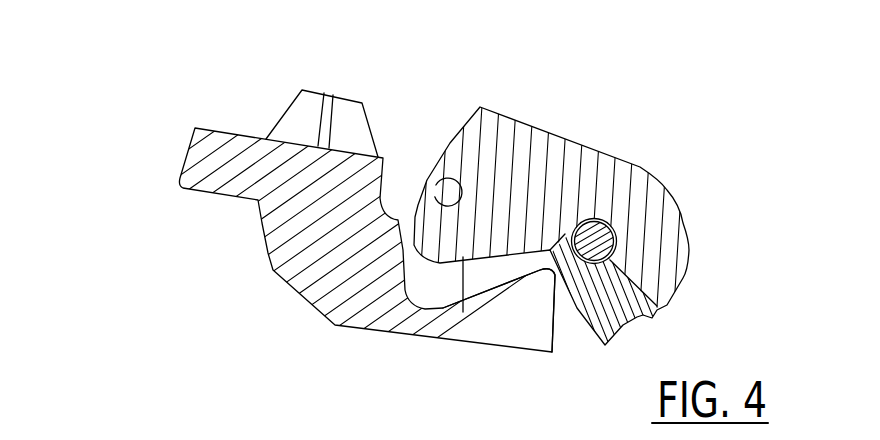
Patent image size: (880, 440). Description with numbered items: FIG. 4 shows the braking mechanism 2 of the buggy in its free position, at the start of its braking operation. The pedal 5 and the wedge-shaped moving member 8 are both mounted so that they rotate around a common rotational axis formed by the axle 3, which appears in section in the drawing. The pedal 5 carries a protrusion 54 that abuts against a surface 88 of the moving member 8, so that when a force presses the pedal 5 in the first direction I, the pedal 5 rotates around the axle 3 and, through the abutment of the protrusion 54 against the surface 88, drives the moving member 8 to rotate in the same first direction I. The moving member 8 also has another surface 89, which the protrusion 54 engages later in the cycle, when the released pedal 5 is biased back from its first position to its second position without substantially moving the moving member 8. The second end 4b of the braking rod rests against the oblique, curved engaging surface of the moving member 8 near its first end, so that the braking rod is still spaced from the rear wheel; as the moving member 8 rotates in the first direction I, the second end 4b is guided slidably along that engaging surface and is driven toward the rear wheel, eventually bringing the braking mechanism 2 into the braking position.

The braking mechanism 2 is at (586, 96).
The axle 3 is at (597, 242).
The second end of the braking rod 4b is at (442, 192).
The pedal 5 is at (238, 152).
The moving member 8 is at (592, 165).
The protrusion of the pedal 54 is at (523, 305).
The surface of the moving member 88 is at (558, 290).
The another surface of the moving member 89 is at (467, 305).
The first direction I is at (128, 145).